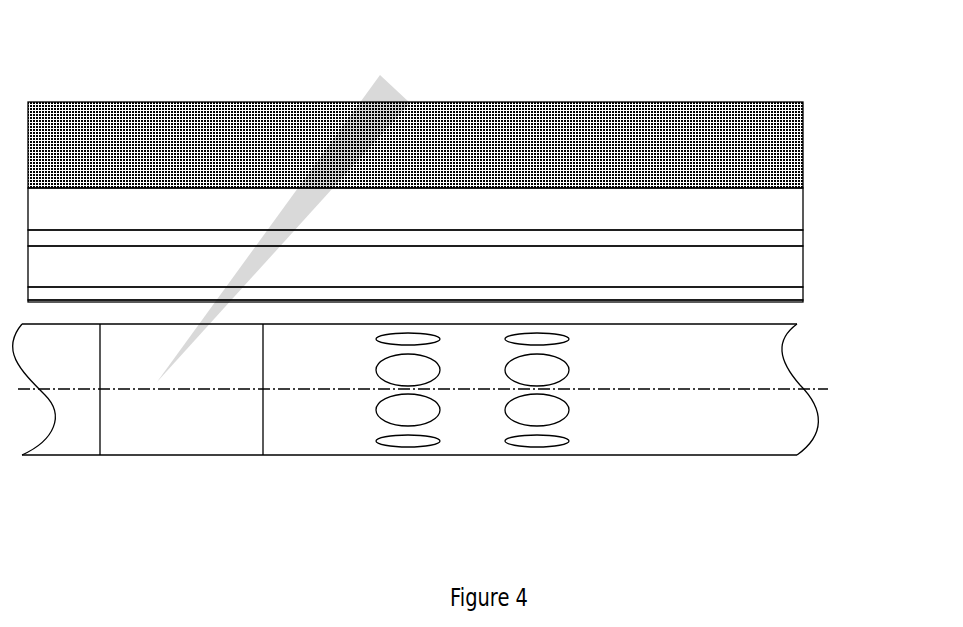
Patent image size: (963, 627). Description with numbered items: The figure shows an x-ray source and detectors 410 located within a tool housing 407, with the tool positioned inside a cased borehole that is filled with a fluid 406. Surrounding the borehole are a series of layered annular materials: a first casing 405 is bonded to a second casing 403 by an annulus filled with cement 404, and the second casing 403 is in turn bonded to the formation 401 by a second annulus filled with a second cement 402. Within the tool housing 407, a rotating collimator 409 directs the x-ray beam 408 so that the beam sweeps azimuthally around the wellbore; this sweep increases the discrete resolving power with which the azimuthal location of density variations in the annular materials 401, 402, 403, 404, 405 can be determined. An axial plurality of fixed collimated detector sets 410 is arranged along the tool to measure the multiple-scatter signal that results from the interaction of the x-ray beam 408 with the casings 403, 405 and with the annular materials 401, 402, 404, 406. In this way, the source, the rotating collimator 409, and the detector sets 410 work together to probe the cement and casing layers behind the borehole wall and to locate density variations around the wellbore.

The formation 401 is at (772, 132).
The second cement 402 is at (779, 220).
The second casing 403 is at (783, 240).
The cement 404 is at (783, 272).
The first casing 405 is at (787, 298).
The fluid 406 is at (787, 318).
The tool housing 407 is at (765, 433).
The x-ray beam 408 is at (387, 100).
The rotating collimator 409 is at (162, 443).
The fixed collimated detector sets 410 is at (397, 439).